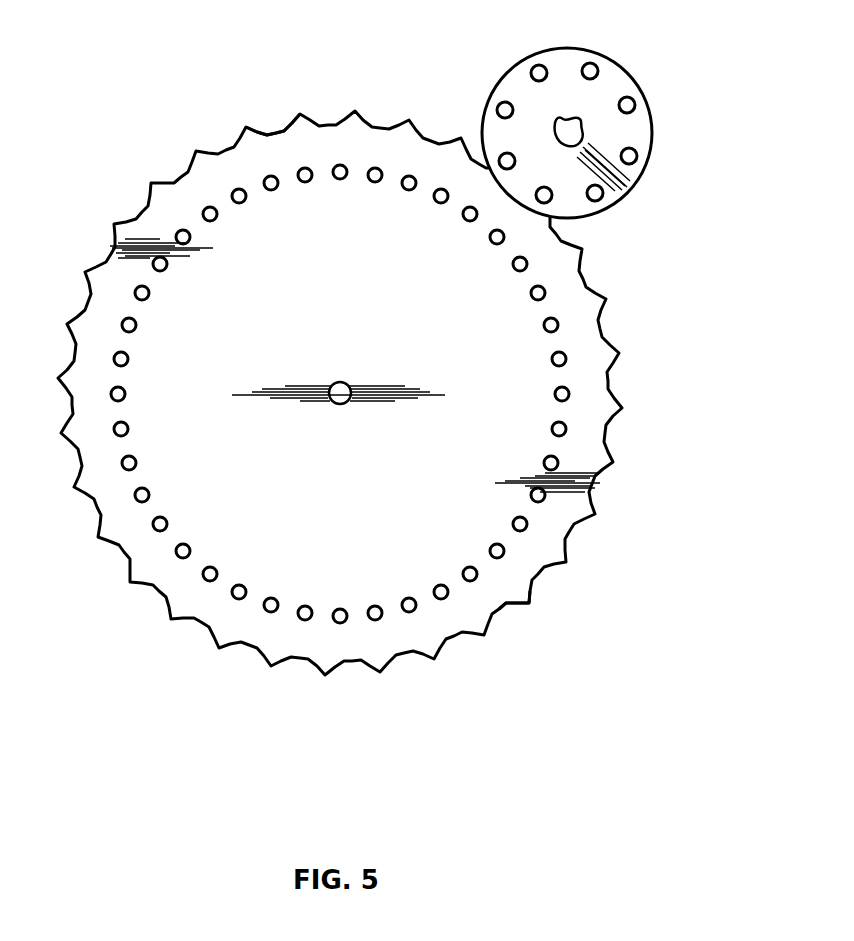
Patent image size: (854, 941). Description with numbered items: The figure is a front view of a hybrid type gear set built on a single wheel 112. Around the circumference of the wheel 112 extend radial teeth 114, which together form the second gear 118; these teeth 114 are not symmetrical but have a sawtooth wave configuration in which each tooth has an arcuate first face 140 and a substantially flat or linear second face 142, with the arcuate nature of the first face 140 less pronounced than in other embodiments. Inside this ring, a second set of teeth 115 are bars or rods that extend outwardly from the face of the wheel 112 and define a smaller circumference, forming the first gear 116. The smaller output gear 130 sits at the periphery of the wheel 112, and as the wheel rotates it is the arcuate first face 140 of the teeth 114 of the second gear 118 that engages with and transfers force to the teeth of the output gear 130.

The wheel 112 is at (599, 357).
The teeth of the second gear 114 is at (482, 627).
The teeth of the first gear 115 is at (180, 552).
The first gear 116 is at (338, 454).
The second gear 118 is at (340, 394).
The output gear 130 is at (590, 108).
The first face of the tooth 140 is at (290, 118).
The second face of the tooth 142 is at (102, 264).